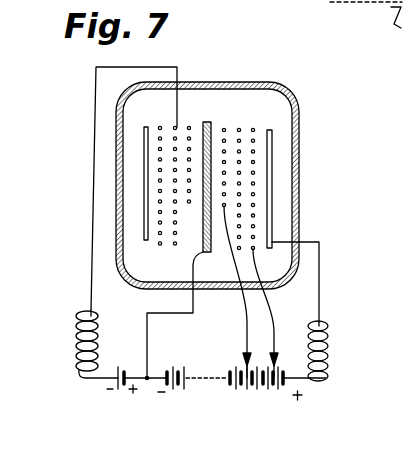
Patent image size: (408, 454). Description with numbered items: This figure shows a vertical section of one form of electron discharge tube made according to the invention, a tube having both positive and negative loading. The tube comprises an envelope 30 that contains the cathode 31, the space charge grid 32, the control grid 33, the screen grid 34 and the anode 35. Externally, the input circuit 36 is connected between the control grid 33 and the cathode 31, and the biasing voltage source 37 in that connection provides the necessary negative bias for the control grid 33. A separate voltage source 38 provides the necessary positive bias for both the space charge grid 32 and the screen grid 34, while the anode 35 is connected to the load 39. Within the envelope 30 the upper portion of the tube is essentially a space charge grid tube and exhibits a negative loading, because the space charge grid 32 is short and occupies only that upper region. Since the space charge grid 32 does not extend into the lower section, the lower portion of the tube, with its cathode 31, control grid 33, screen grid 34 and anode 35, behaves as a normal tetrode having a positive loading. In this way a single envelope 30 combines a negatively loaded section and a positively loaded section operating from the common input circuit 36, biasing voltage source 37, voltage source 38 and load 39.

The envelope 30 is at (299, 115).
The cathode 31 is at (226, 128).
The space charge grid 32 is at (253, 128).
The control grid 33 is at (178, 127).
The screen grid 34 is at (214, 121).
The anode 35 is at (272, 167).
The input circuit 36 is at (77, 348).
The biasing voltage source 37 is at (118, 392).
The voltage source 38 is at (205, 387).
The load 39 is at (328, 347).